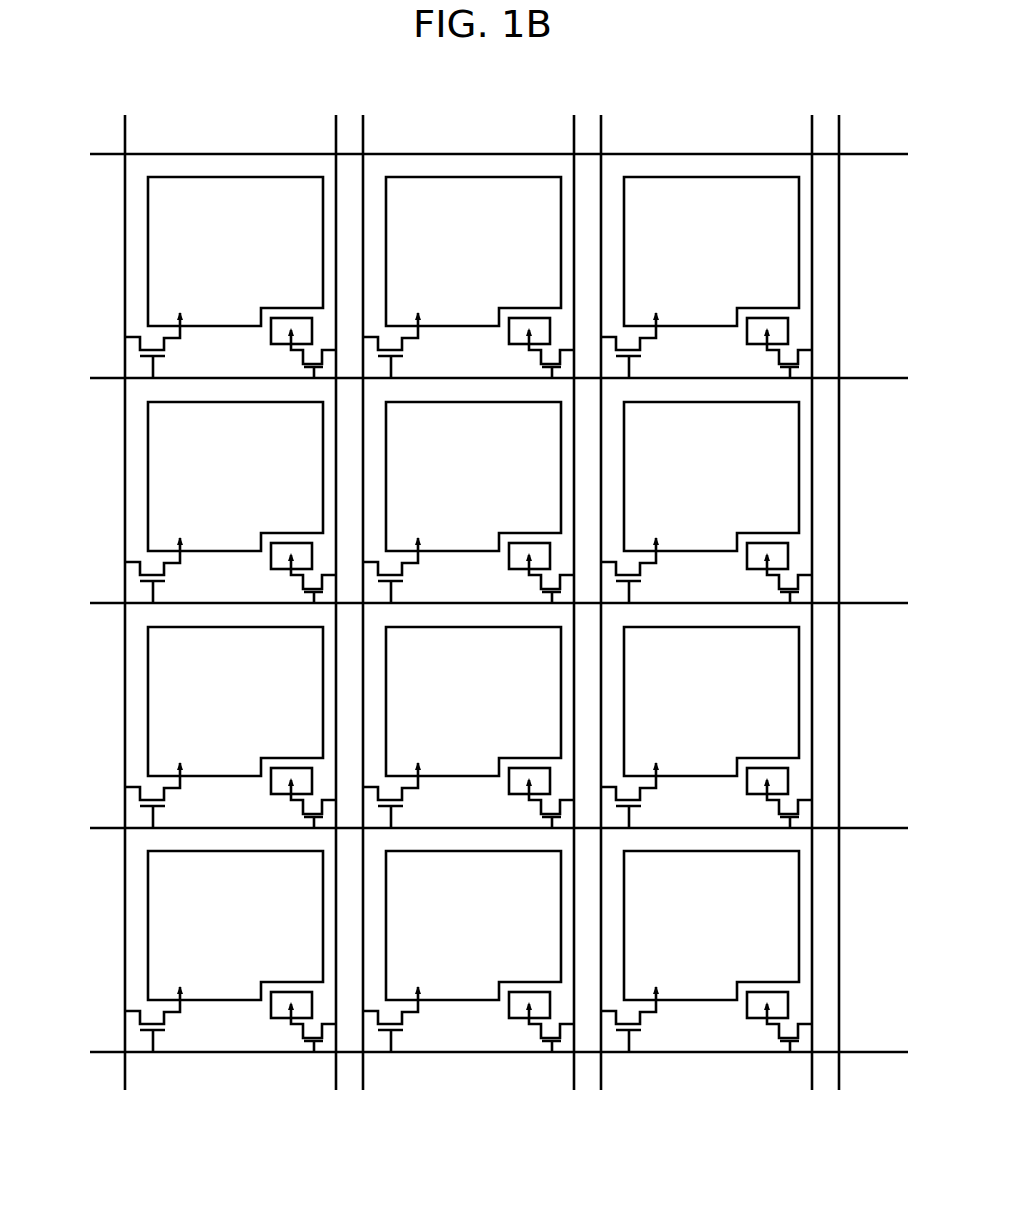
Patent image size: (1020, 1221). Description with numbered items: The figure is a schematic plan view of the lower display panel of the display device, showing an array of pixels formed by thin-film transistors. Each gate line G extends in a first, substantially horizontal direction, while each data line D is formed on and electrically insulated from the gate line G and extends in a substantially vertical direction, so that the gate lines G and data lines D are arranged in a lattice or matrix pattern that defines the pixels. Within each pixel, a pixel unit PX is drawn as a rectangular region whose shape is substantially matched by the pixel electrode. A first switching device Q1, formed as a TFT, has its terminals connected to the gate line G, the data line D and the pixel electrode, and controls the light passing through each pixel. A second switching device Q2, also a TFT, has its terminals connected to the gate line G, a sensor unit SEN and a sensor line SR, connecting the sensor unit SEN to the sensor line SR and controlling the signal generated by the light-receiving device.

The data line D is at (482, 590).
The sensor line SR is at (573, 590).
The sensor unit SEN is at (302, 327).
The gate line G is at (488, 602).
The pixel unit PX is at (148, 247).
The first switching device Q1 is at (134, 348).
The second switching device Q2 is at (292, 362).